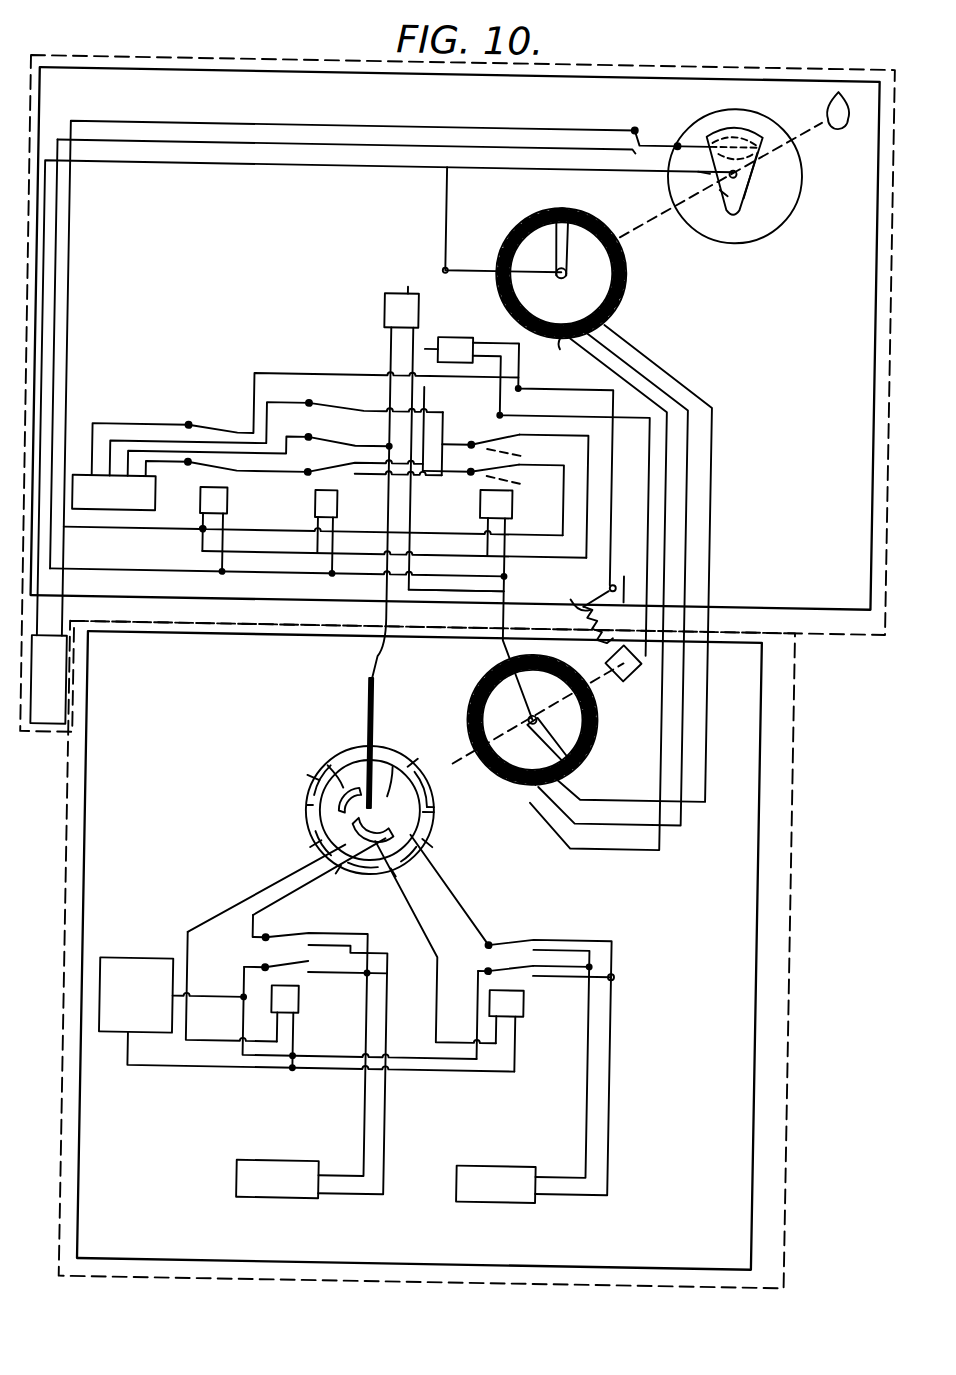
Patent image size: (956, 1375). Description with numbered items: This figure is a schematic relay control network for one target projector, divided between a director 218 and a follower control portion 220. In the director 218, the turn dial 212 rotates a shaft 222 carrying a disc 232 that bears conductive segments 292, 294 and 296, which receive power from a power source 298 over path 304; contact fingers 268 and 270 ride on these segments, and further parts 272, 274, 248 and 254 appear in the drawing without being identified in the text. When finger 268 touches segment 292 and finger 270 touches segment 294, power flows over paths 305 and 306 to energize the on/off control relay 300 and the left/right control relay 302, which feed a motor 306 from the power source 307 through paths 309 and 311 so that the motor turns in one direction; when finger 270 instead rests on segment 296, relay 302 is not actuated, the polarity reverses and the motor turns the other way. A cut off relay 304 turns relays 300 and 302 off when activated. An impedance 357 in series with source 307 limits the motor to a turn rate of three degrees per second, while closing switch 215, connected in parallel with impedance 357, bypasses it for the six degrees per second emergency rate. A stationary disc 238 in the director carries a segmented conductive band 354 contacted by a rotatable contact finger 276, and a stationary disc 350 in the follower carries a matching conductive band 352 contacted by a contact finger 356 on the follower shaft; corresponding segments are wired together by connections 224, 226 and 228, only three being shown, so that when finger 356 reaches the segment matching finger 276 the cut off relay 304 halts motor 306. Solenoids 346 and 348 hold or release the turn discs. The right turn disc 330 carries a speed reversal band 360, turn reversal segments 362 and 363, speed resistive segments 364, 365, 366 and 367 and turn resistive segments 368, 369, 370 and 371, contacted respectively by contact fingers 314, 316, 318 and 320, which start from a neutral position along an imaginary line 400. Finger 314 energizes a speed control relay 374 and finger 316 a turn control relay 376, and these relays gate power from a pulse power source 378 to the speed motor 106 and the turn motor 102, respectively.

The director 218 is at (742, 55).
The follower control portion 220 is at (612, 1276).
The turn dial 212 is at (840, 113).
The shaft 222 is at (658, 208).
The disc 232 is at (776, 212).
The contact finger 270 is at (712, 118).
The contact finger 268 is at (691, 161).
The contact 272 is at (636, 120).
The contact 274 is at (658, 125).
The conductive segment 292 is at (755, 160).
The conductive segment 294 is at (752, 128).
The conductive segment 296 is at (722, 118).
The pivot 248 is at (744, 172).
The cam tip 254 is at (722, 178).
The rotatable contact finger 276 is at (572, 210).
The stationary disc 238 is at (503, 296).
The segmented conductive band 354 is at (553, 330).
The electrical path 305 is at (395, 119).
The motor 306 is at (462, 138).
The cut off relay 304 is at (360, 161).
The solenoid 348 is at (392, 287).
The solenoid 346 is at (447, 333).
The power source 307 is at (86, 472).
The on/off control relay 300 is at (236, 494).
The left/right control relay 302 is at (340, 482).
The electrical path 311 is at (418, 492).
The connection 228 is at (718, 455).
The connection 226 is at (694, 490).
The connection 224 is at (673, 530).
The switch 215 is at (640, 575).
The impedance 357 is at (592, 596).
The electrical path 309 is at (392, 588).
The power source 298 is at (76, 635).
The stationary disc 350 is at (492, 678).
The contact finger 356 is at (590, 730).
The conductive band 352 is at (548, 770).
The speed resistive segment 365 is at (376, 740).
The imaginary line 400 is at (386, 697).
The turn reversal segment 363 is at (366, 760).
The speed reversal band 360 is at (382, 779).
The speed resistive segment 366 is at (414, 768).
The turn resistive segment 369 is at (322, 780).
The turn resistive segment 370 is at (440, 772).
The speed resistive segment 364 is at (320, 800).
The turn reversal segment 362 is at (441, 803).
The turn resistive segment 368 is at (330, 826).
The right turn disc 330 is at (444, 814).
The turn resistive segment 371 is at (432, 842).
The speed resistive segment 367 is at (385, 858).
The contact finger 314 is at (235, 910).
The contact finger 318 is at (306, 882).
The contact finger 316 is at (425, 898).
The contact finger 320 is at (480, 910).
The pulse power source 378 is at (148, 956).
The speed control relay 374 is at (315, 996).
The turn control relay 376 is at (540, 992).
The speed motor 106 is at (298, 1194).
The turn motor 102 is at (512, 1196).